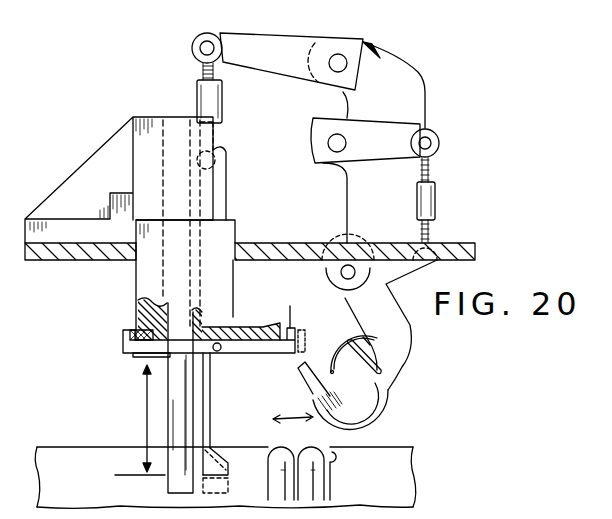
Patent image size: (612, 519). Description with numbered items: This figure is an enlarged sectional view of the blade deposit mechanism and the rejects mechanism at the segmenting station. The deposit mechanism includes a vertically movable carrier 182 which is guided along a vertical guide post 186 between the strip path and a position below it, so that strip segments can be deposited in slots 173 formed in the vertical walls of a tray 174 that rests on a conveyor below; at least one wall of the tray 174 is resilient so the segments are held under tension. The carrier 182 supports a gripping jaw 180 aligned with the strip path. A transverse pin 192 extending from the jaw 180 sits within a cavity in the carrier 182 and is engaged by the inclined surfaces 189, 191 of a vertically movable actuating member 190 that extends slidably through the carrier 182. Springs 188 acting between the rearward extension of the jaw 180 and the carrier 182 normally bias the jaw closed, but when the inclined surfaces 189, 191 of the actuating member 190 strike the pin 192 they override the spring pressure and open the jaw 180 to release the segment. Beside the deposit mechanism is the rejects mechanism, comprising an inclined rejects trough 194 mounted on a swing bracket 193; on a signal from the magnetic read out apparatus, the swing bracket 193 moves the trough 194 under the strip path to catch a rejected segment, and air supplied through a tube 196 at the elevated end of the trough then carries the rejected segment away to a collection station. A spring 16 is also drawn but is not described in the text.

The spring 16 is at (315, 478).
The slots 173 is at (287, 463).
The tray 174 is at (393, 491).
The gripping jaw 180 is at (218, 320).
The carrier 182 is at (147, 272).
The vertical guide post 186 is at (177, 406).
The springs 188 is at (137, 330).
The inclined surface 189 is at (217, 323).
The actuating member 190 is at (212, 413).
The inclined surface 191 is at (222, 463).
The transverse pins 192 is at (222, 351).
The swing bracket 193 is at (397, 322).
The rejects trough 194 is at (367, 406).
The tube 196 is at (327, 358).